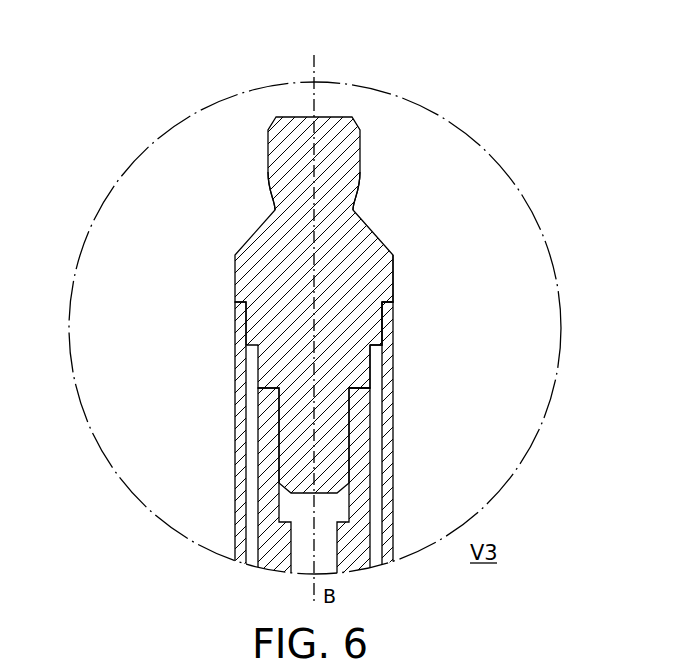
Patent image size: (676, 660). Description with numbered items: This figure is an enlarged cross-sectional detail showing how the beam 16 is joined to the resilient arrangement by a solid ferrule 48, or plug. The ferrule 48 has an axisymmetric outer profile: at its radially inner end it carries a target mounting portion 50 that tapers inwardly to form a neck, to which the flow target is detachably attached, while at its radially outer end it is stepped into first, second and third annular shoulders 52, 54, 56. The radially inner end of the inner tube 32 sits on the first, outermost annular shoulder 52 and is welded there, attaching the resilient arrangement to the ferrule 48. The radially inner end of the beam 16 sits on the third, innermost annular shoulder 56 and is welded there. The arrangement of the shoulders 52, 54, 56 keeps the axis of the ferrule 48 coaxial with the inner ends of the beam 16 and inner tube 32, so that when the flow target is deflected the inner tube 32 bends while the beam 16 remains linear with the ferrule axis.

The beam 16 is at (355, 570).
The inner tube 32 is at (393, 500).
The ferrule 48 is at (340, 160).
The target mounting portion 50 is at (357, 196).
The first annular shoulder 52 is at (393, 305).
The second annular shoulder 54 is at (383, 349).
The third annular shoulder 56 is at (362, 391).